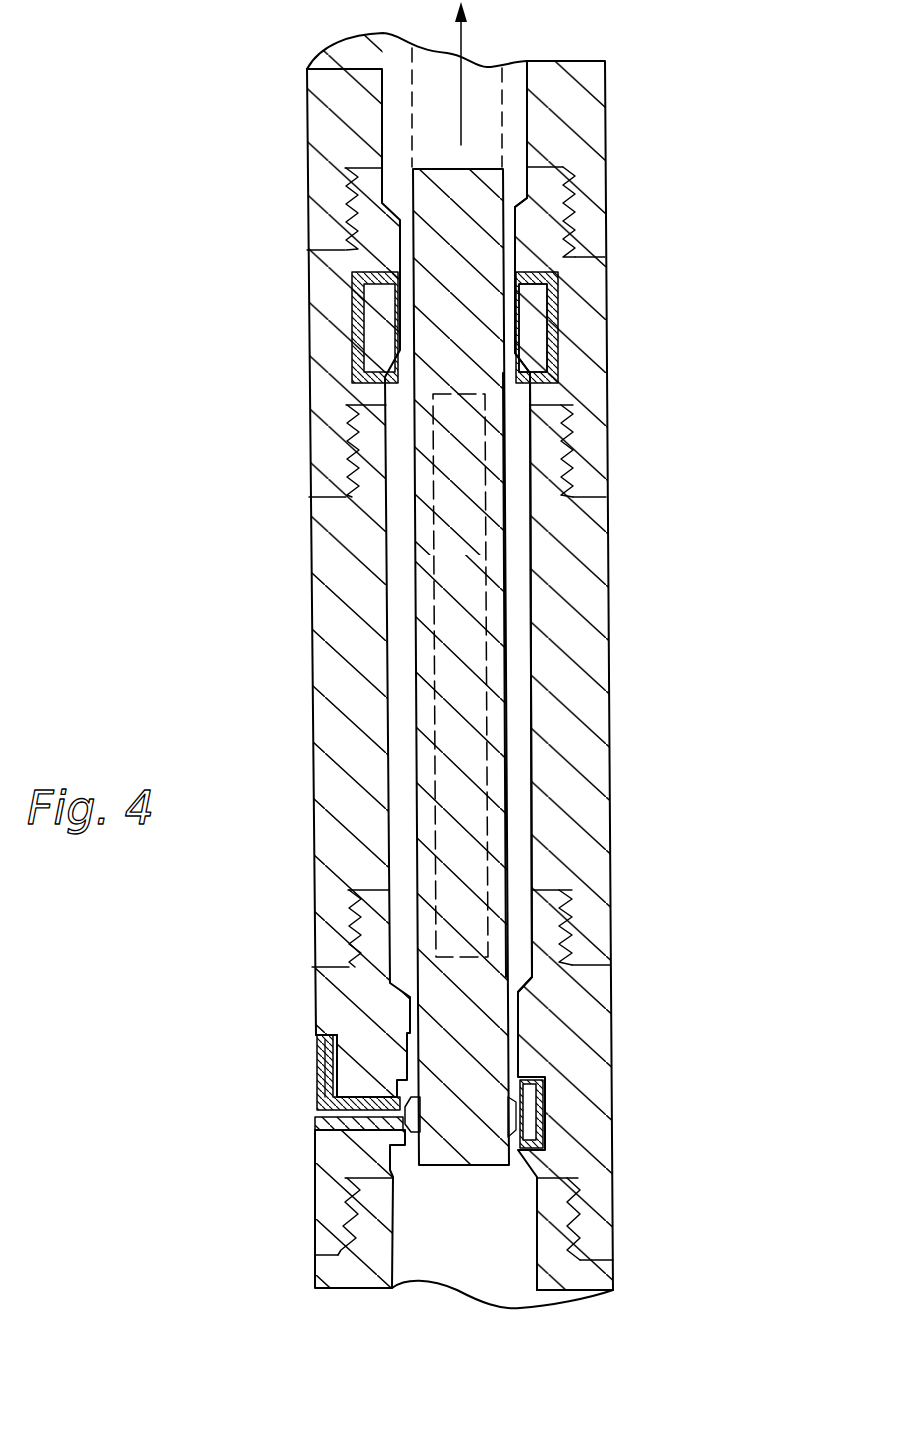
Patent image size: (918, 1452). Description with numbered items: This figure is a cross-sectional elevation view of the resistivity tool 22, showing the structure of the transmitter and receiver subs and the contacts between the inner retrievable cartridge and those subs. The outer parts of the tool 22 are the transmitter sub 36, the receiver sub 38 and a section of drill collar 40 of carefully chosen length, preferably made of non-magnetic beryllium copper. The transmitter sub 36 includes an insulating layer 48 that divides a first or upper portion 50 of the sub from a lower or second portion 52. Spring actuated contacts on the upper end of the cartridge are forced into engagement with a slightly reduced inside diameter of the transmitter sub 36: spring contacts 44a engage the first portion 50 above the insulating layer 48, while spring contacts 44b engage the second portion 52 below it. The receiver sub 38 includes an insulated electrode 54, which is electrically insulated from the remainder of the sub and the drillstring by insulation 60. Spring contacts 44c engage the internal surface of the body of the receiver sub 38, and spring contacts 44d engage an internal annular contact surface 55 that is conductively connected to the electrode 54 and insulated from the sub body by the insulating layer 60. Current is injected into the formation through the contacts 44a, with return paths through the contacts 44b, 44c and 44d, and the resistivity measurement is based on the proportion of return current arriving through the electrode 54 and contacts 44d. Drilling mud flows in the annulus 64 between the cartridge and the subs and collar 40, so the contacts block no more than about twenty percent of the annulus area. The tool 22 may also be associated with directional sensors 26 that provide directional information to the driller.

The resistivity tool 22 is at (208, 592).
The directional sensors 26 is at (505, 115).
The transmitter sub 36 is at (304, 324).
The receiver sub 38 is at (315, 1153).
The drill collar 40 is at (308, 636).
The spring contacts 44a is at (510, 232).
The spring contacts 44b is at (510, 337).
The spring contacts 44c is at (512, 1018).
The spring contacts 44d is at (512, 1128).
The insulating layer 48 is at (605, 378).
The first portion 50 is at (603, 290).
The second portion 52 is at (605, 190).
The insulated electrode 54 is at (315, 1070).
The internal annular contact surface 55 is at (400, 1117).
The insulating layer 60 is at (317, 1040).
The annulus 64 is at (518, 845).